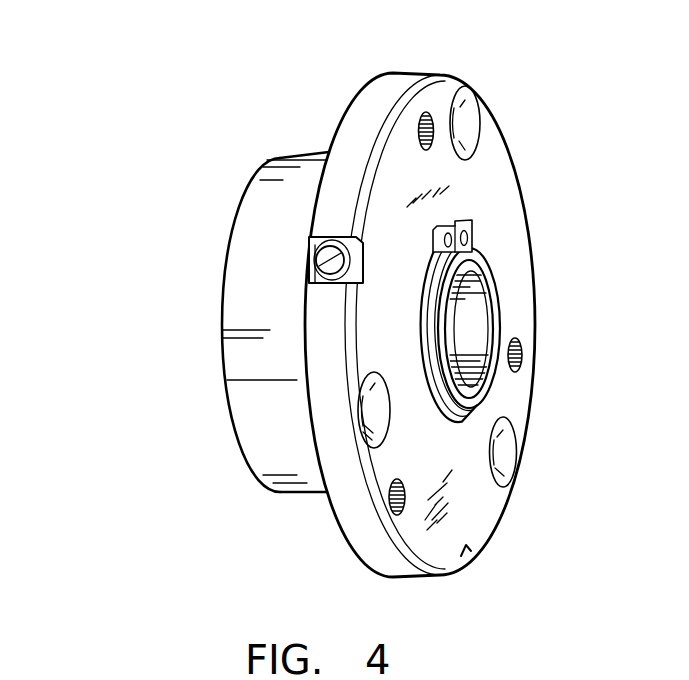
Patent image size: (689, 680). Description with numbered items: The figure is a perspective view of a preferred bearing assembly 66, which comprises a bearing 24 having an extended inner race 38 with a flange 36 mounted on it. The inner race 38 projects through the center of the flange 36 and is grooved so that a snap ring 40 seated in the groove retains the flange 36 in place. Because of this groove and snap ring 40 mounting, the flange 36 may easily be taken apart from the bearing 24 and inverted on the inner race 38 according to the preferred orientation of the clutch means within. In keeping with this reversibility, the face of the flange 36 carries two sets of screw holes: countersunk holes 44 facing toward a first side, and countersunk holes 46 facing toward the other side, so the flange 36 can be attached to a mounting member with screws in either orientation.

The bearing 24 is at (237, 213).
The flange 36 is at (392, 83).
The extended inner race 38 is at (494, 297).
The snap ring 40 is at (474, 230).
The countersunk holes 44 is at (473, 110).
The countersunk holes 46 is at (428, 113).
The bearing assembly 66 is at (138, 367).